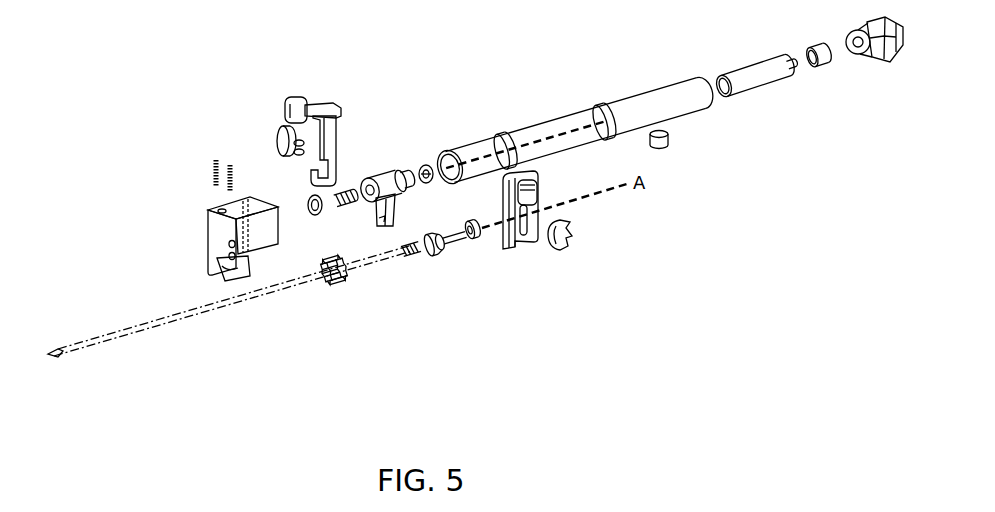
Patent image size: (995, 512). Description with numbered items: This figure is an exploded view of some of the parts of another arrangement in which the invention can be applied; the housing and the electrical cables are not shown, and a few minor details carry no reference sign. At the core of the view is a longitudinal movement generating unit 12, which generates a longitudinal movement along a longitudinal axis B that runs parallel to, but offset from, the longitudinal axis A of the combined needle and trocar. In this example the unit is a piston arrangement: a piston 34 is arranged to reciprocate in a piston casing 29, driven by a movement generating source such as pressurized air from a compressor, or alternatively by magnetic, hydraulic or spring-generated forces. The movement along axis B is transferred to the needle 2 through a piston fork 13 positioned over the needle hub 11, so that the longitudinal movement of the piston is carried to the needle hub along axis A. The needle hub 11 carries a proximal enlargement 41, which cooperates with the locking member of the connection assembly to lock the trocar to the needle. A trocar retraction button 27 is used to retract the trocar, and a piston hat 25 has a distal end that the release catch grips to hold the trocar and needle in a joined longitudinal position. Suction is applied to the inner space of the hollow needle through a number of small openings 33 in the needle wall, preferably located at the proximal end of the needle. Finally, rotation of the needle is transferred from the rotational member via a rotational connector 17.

The needle 2 is at (222, 305).
The needle hub 11 is at (452, 247).
The longitudinal movement generating unit 12 is at (566, 80).
The piston fork 13 is at (389, 205).
The rotational connector 17 is at (340, 285).
The piston hat 25 is at (222, 233).
The trocar retraction button 27 is at (531, 192).
The piston casing 29 is at (528, 135).
The small openings 33 is at (313, 278).
The piston 34 is at (757, 77).
The proximal enlargement 41 is at (475, 237).